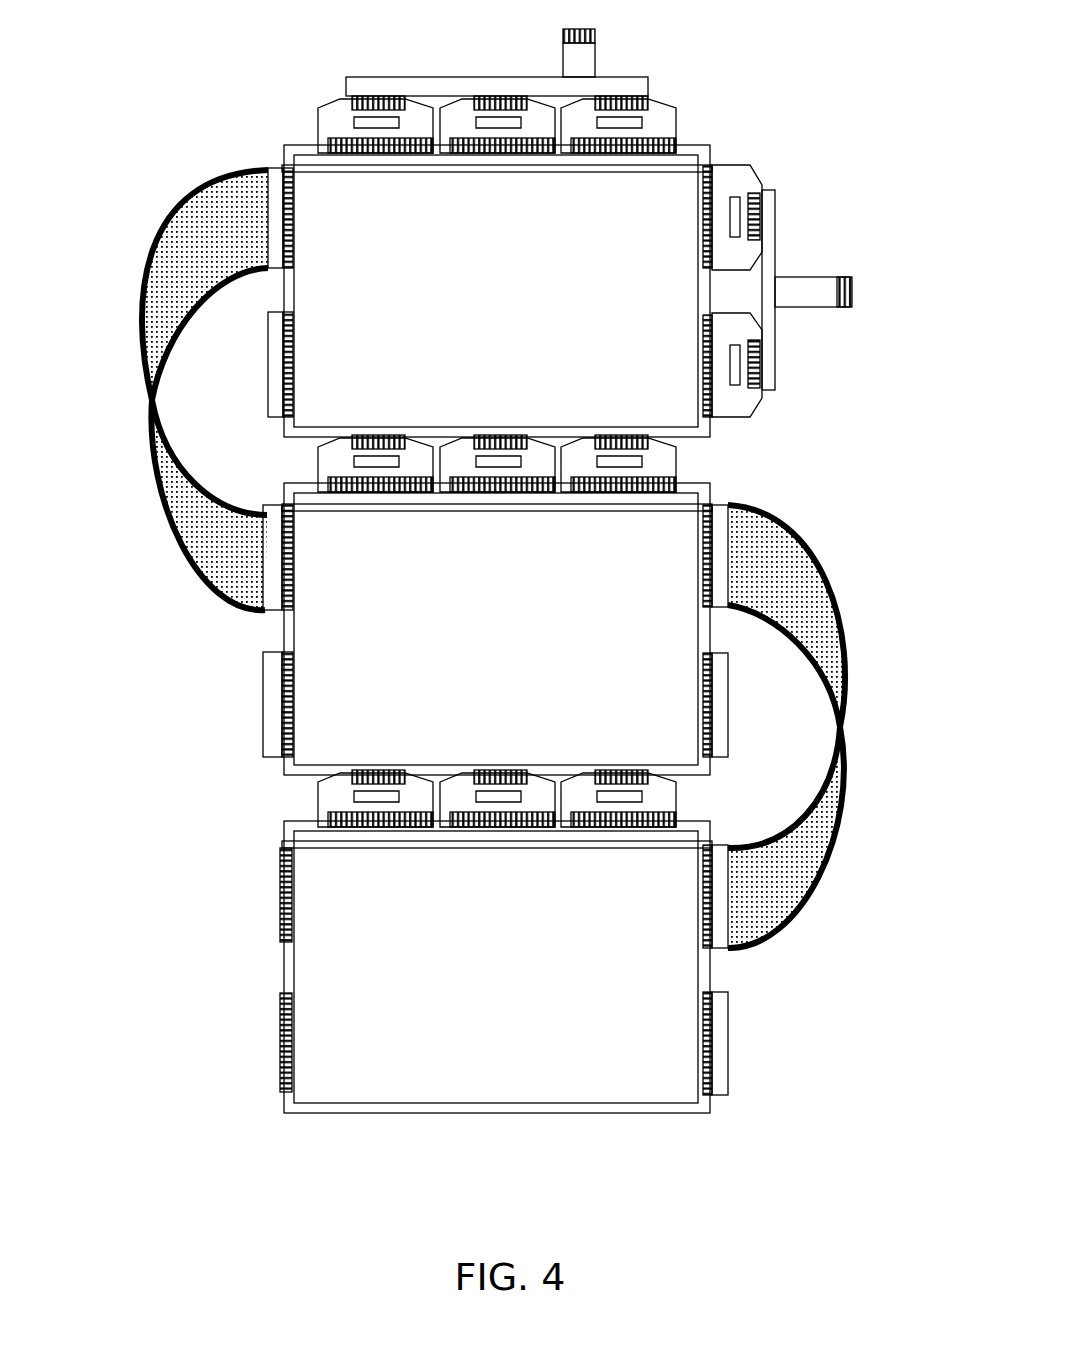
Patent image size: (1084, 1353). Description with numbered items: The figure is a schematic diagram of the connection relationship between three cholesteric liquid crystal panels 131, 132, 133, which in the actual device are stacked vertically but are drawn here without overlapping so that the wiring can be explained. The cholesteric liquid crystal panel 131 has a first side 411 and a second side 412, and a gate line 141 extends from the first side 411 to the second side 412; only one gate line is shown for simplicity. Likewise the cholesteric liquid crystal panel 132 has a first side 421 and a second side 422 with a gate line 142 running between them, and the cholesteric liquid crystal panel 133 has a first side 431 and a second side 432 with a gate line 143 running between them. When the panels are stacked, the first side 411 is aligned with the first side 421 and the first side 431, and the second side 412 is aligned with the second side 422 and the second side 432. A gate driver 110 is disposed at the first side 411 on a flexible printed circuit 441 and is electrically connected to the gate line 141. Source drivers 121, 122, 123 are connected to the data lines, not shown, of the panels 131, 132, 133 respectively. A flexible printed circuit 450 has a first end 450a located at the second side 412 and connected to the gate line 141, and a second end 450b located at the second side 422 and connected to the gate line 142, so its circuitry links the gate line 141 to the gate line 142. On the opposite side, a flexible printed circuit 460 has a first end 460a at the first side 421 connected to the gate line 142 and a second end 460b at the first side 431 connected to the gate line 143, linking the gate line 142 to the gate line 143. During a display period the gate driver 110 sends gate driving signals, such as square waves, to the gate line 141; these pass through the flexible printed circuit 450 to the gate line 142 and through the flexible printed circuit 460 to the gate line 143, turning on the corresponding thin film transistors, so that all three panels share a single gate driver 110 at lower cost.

The gate driver 110 is at (757, 206).
The source driver 121 is at (356, 123).
The source driver 122 is at (322, 463).
The source driver 123 is at (350, 798).
The cholesteric liquid crystal panel 131 is at (690, 165).
The cholesteric liquid crystal panel 132 is at (698, 482).
The cholesteric liquid crystal panel 133 is at (660, 1115).
The gate line 141 is at (713, 169).
The gate line 142 is at (688, 511).
The gate line 143 is at (282, 848).
The first side 411 is at (702, 285).
The second side 412 is at (293, 295).
The first side 421 is at (703, 633).
The second side 422 is at (283, 634).
The first side 431 is at (703, 968).
The second side 432 is at (287, 968).
The flexible printed circuit 441 is at (737, 411).
The flexible printed circuit 450 is at (160, 385).
The first end 450a is at (250, 204).
The second end 450b is at (226, 561).
The flexible printed circuit 460 is at (835, 726).
The first end 460a is at (755, 567).
The second end 460b is at (770, 890).